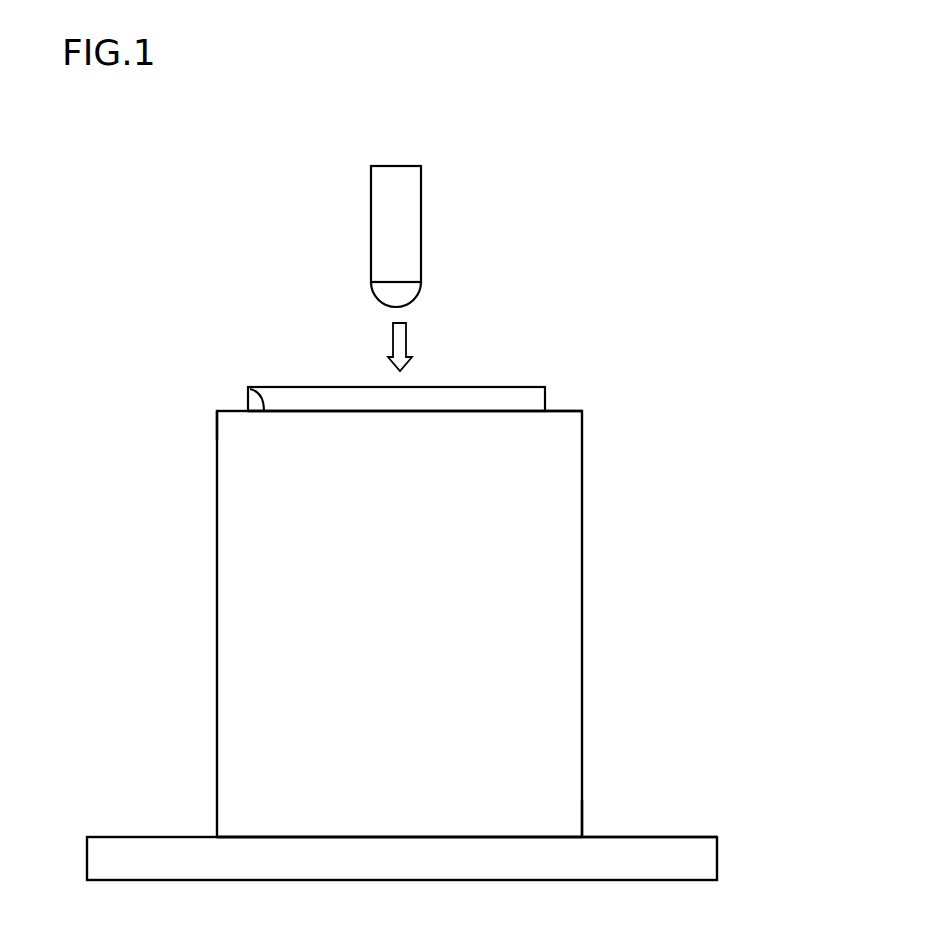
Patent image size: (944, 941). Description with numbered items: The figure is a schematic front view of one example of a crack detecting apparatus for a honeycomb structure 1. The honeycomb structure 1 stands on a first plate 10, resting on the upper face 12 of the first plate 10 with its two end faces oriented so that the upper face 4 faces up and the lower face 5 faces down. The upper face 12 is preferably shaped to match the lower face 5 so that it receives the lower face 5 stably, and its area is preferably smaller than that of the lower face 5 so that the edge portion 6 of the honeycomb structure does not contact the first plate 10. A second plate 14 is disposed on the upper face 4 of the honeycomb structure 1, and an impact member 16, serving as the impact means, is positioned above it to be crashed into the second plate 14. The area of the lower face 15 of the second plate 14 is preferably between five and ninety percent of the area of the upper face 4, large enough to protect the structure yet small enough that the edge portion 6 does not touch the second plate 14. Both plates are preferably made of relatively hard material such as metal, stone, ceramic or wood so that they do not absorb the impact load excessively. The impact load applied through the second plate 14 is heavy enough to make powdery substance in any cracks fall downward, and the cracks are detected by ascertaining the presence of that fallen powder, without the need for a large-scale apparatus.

The honeycomb structure 1 is at (597, 611).
The upper face 4 is at (248, 389).
The lower face 5 is at (250, 843).
The edge portion 6 is at (217, 411).
The first plate 10 is at (737, 841).
The upper face 12 is at (637, 837).
The second plate 14 is at (558, 395).
The lower face 15 is at (508, 411).
The impact member 16 is at (421, 187).